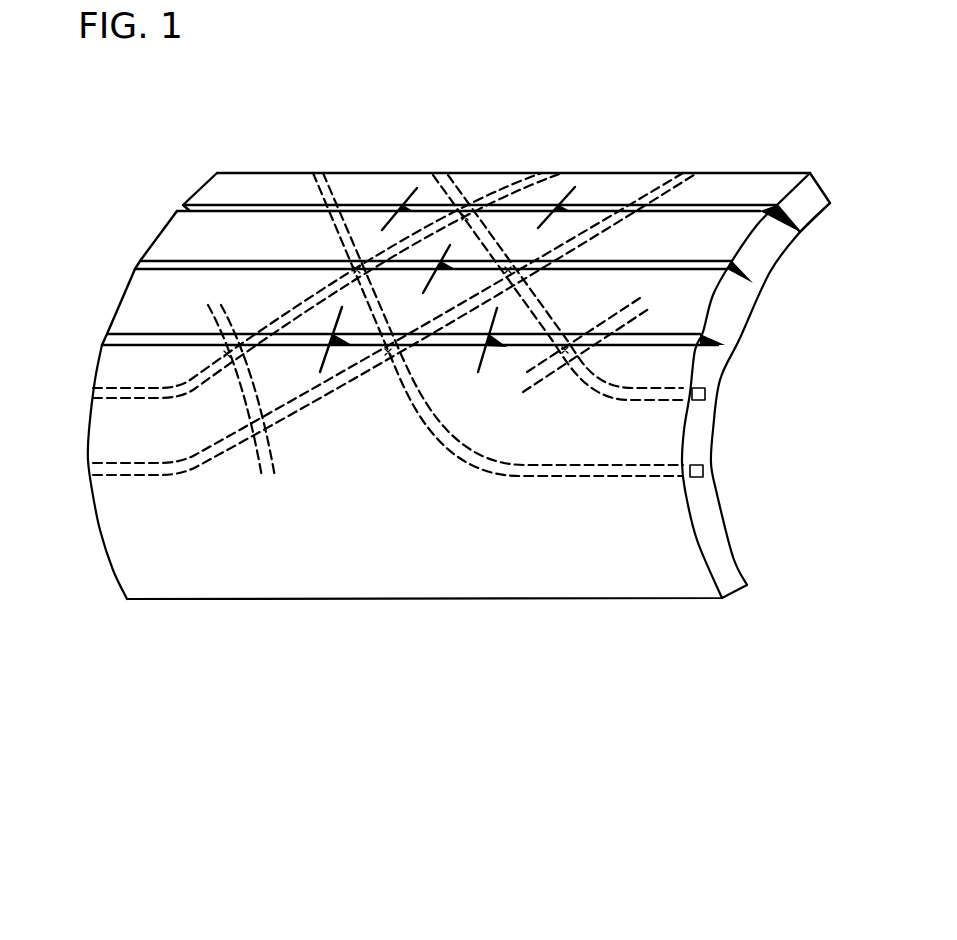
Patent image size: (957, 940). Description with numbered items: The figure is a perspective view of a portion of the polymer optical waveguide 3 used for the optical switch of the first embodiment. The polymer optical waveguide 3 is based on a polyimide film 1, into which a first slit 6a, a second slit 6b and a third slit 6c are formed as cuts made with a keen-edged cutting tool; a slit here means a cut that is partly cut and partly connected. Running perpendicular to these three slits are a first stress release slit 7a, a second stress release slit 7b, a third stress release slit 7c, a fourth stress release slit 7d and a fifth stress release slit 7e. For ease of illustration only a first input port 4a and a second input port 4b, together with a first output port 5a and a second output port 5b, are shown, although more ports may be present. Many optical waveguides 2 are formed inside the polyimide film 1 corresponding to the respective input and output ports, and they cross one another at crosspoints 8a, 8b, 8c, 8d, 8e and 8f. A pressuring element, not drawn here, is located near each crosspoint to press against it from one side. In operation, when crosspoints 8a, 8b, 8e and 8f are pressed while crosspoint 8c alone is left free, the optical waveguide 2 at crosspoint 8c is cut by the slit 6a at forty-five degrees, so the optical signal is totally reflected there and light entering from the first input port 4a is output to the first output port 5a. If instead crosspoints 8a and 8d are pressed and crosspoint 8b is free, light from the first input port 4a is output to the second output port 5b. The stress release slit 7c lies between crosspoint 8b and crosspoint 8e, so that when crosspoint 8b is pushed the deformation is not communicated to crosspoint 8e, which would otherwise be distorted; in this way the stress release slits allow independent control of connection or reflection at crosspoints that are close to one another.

The polyimide film 1 is at (447, 540).
The optical waveguide 2 is at (567, 470).
The polymer optical waveguide 3 is at (797, 138).
The first input port 4a is at (118, 396).
The second input port 4b is at (118, 470).
The first output port 5a is at (700, 392).
The second output port 5b is at (698, 470).
The first slit 6a is at (750, 203).
The second slit 6b is at (705, 265).
The third slit 6c is at (655, 336).
The first stress release slit 7a is at (410, 198).
The second stress release slit 7b is at (575, 190).
The third stress release slit 7c is at (450, 247).
The fourth stress release slit 7d is at (335, 318).
The fifth stress release slit 7e is at (497, 318).
The crosspoint 8a is at (227, 354).
The crosspoint 8b is at (357, 268).
The crosspoint 8c is at (464, 217).
The crosspoint 8d is at (387, 349).
The crosspoint 8e is at (508, 268).
The crosspoint 8f is at (565, 351).